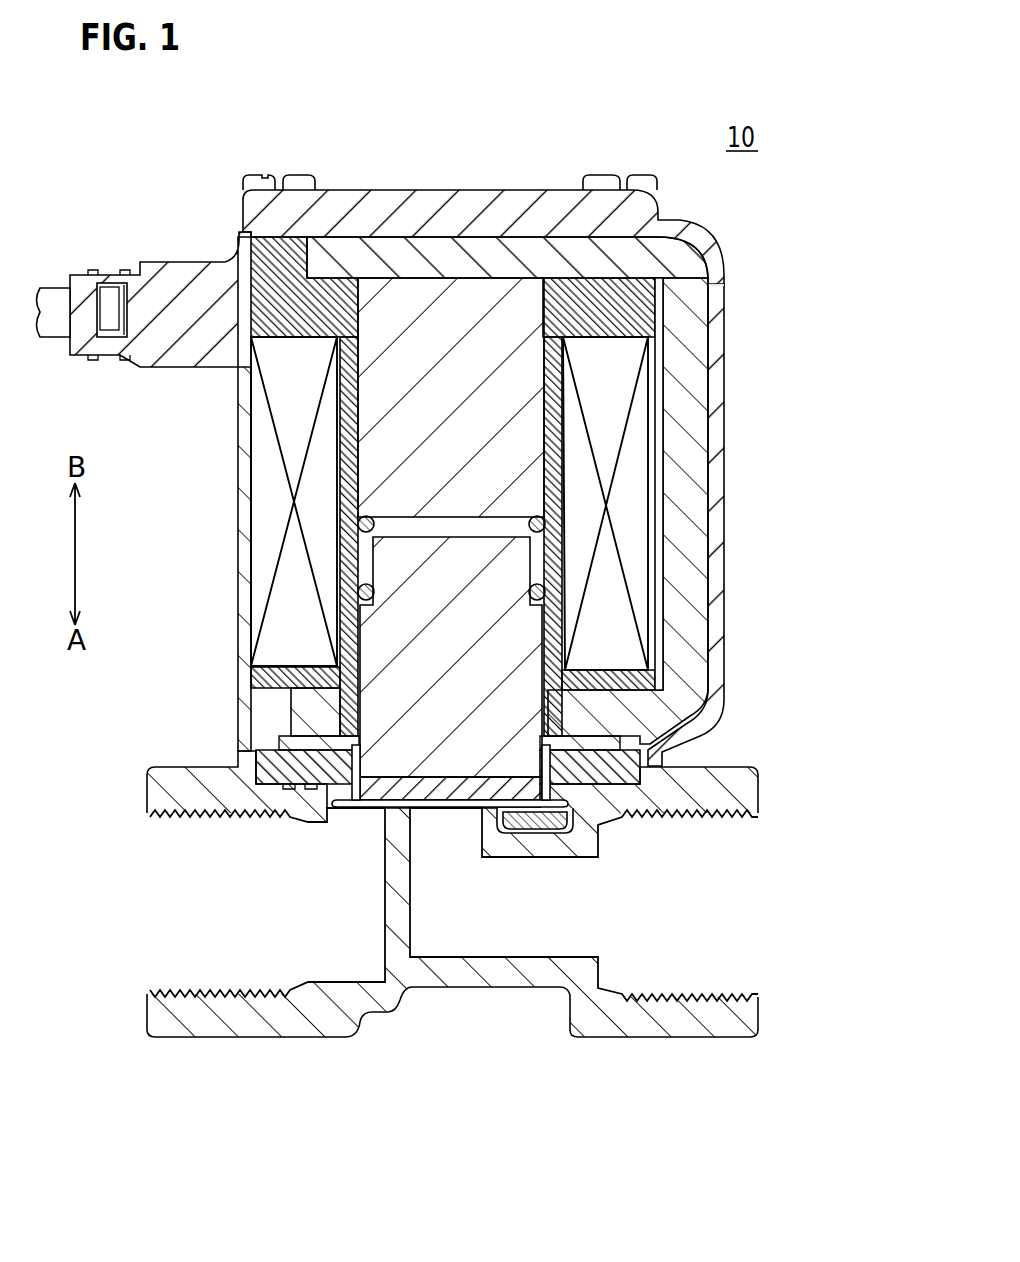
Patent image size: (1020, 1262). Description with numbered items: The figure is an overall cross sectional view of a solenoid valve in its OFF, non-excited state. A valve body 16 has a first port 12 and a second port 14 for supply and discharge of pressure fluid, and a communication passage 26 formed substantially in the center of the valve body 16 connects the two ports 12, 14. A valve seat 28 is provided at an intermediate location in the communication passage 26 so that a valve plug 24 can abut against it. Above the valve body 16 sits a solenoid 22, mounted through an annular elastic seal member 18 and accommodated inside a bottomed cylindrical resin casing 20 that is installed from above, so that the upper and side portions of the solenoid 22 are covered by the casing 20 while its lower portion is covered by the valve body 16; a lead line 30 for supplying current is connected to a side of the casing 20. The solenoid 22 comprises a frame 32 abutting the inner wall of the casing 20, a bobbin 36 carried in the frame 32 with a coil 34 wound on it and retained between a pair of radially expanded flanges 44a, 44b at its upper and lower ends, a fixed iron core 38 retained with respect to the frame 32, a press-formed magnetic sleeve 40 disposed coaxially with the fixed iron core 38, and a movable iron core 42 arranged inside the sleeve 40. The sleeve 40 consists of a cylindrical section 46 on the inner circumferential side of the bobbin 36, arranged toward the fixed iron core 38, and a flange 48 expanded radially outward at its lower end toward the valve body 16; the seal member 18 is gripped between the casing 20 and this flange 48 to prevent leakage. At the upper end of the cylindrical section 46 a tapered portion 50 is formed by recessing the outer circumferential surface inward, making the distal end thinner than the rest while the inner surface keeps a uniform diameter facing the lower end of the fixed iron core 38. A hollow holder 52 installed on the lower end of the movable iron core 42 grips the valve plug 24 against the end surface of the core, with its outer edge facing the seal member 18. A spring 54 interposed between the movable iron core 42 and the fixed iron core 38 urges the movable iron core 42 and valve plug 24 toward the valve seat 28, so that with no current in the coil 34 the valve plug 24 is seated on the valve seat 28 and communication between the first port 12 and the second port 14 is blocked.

The first port 12 is at (158, 893).
The second port 14 is at (745, 900).
The valve body 16 is at (452, 924).
The seal member 18 is at (609, 784).
The casing 20 is at (716, 392).
The solenoid 22 is at (257, 481).
The valve plug 24 is at (451, 784).
The communication passage 26 is at (455, 940).
The valve seat 28 is at (412, 796).
The lead line 30 is at (52, 297).
The frame 32 is at (483, 250).
The coil 34 is at (262, 567).
The bobbin 36 is at (558, 402).
The fixed iron core 38 is at (415, 290).
The sleeve 40 is at (532, 659).
The movable iron core 42 is at (445, 550).
The upper flange 44a is at (607, 320).
The lower flange 44b is at (608, 680).
The cylindrical section 46 is at (548, 593).
The flange 48 is at (592, 735).
The tapered portion 50 is at (548, 505).
The holder 52 is at (540, 812).
The spring 54 is at (372, 513).